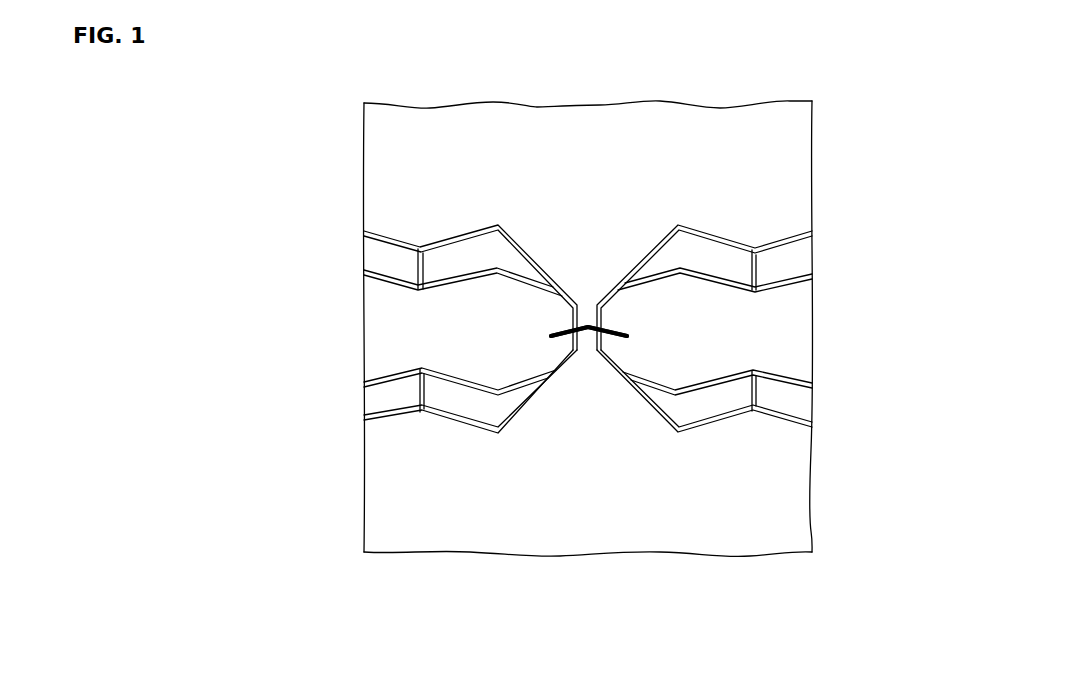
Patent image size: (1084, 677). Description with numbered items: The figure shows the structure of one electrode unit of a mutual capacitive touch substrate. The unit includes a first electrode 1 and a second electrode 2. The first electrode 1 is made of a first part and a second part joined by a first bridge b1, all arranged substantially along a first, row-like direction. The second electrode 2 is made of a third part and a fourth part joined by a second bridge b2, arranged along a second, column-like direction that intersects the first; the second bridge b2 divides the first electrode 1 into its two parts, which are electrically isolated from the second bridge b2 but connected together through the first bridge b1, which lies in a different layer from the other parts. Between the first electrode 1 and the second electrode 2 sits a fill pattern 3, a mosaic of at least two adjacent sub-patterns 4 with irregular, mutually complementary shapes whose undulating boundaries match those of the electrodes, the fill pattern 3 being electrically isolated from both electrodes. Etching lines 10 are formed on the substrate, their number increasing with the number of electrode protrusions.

The first electrode 1 is at (632, 326).
The second electrode 2 is at (588, 571).
The fill pattern 3 is at (337, 352).
The sub-pattern 4 is at (391, 352).
The etching line 10 is at (764, 311).
The first bridge b1 is at (586, 322).
The second bridge b2 is at (585, 342).